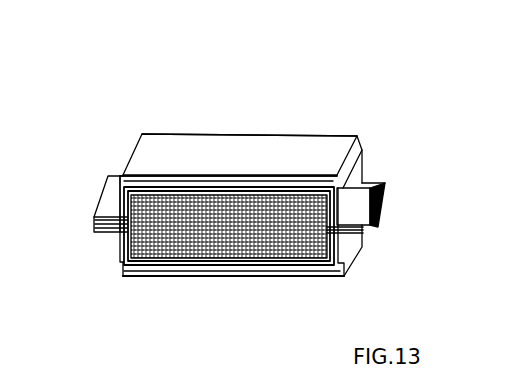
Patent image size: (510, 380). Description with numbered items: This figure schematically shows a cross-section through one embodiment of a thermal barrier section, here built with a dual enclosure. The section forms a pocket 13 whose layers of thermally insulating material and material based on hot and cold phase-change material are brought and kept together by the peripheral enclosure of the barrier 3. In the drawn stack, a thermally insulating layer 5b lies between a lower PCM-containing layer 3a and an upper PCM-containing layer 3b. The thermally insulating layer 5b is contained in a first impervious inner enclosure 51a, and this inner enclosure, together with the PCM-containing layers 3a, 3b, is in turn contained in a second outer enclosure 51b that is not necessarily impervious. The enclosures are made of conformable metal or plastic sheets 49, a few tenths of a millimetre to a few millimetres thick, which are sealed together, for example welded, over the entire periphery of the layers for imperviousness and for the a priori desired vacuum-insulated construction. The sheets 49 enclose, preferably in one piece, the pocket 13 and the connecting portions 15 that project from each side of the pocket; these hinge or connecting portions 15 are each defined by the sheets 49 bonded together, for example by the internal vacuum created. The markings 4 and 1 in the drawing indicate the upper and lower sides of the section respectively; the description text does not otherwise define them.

The lower region of ceramic body 1 is at (233, 308).
The upper region of ceramic body 4 is at (230, 136).
The barrier 3 is at (201, 78).
The PCM-containing layer 3a is at (188, 266).
The PCM-containing layer 3b is at (268, 183).
The thermally insulating layer 5b is at (310, 248).
The pocket 13 is at (331, 120).
The connecting portion 15 is at (108, 203).
The conformable sheet 49 is at (318, 182).
The first impervious inner enclosure 51a is at (161, 182).
The second outer enclosure 51b is at (108, 283).